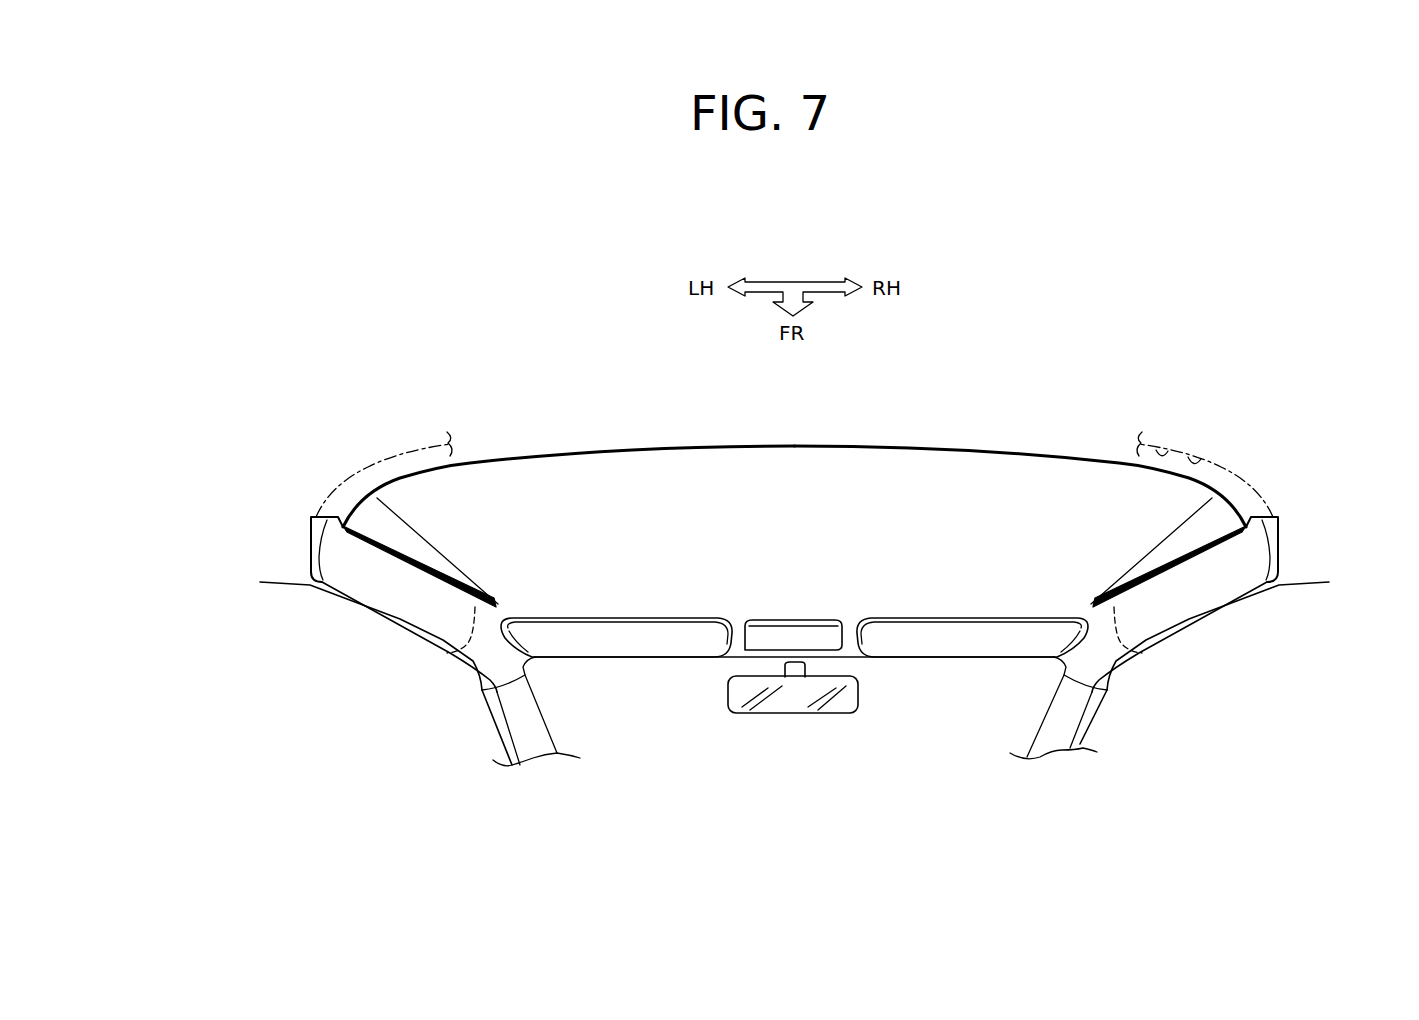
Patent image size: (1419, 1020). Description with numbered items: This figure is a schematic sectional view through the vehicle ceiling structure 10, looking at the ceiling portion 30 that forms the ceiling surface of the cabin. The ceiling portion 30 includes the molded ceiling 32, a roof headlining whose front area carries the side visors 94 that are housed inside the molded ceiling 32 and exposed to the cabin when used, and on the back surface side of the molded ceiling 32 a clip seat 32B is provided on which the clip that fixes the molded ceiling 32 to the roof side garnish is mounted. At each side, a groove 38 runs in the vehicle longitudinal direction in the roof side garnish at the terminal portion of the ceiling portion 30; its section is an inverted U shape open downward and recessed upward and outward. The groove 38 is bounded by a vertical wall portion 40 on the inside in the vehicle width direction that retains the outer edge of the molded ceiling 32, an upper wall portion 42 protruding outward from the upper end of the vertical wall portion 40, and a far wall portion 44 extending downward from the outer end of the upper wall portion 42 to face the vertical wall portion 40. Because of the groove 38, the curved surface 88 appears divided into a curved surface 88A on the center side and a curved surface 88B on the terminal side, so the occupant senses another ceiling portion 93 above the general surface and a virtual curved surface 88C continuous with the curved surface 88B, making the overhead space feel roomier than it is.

The vehicle ceiling structure 10 is at (794, 658).
The ceiling portion 30 is at (1237, 469).
The molded ceiling 32 is at (990, 453).
The clip seat 32B is at (858, 657).
The groove 38 is at (330, 556).
The vertical wall portion 40 is at (331, 529).
The upper wall portion 42 is at (320, 528).
The far wall portion 44 is at (323, 545).
The curved surface 88 is at (757, 529).
The curved surface on center side 88A is at (807, 463).
The curved surface on terminal portion side 88B is at (305, 553).
The virtual curved surface 88C is at (1197, 455).
The ceiling portion 93 is at (1166, 446).
The side visor 94 is at (610, 632).